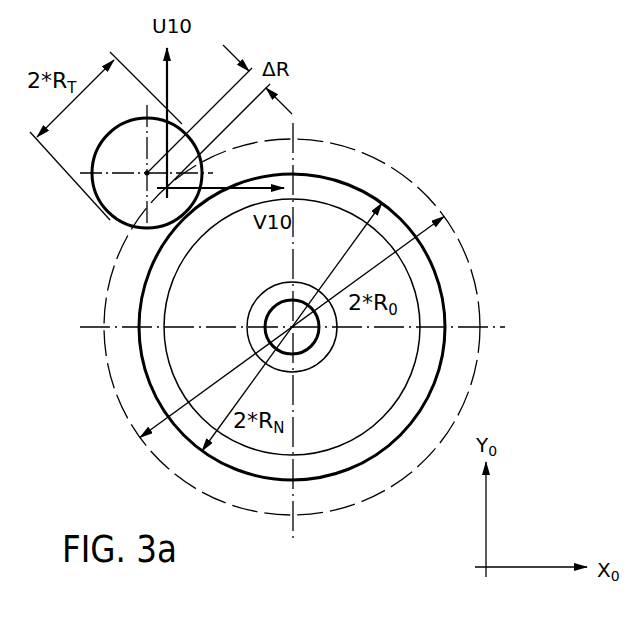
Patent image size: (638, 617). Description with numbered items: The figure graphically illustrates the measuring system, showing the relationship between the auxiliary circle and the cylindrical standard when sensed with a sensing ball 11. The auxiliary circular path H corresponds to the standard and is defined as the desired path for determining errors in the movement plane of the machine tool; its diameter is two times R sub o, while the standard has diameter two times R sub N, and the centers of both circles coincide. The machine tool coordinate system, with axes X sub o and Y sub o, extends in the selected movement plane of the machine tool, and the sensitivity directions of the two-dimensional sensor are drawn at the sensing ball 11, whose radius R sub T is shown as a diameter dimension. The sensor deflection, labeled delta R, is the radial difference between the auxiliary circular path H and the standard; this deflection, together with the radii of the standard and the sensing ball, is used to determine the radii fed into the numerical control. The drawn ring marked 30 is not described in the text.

The sensing ball 11 is at (116, 210).
The workpiece ring 30 is at (143, 351).
The auxiliary circular path H is at (477, 280).